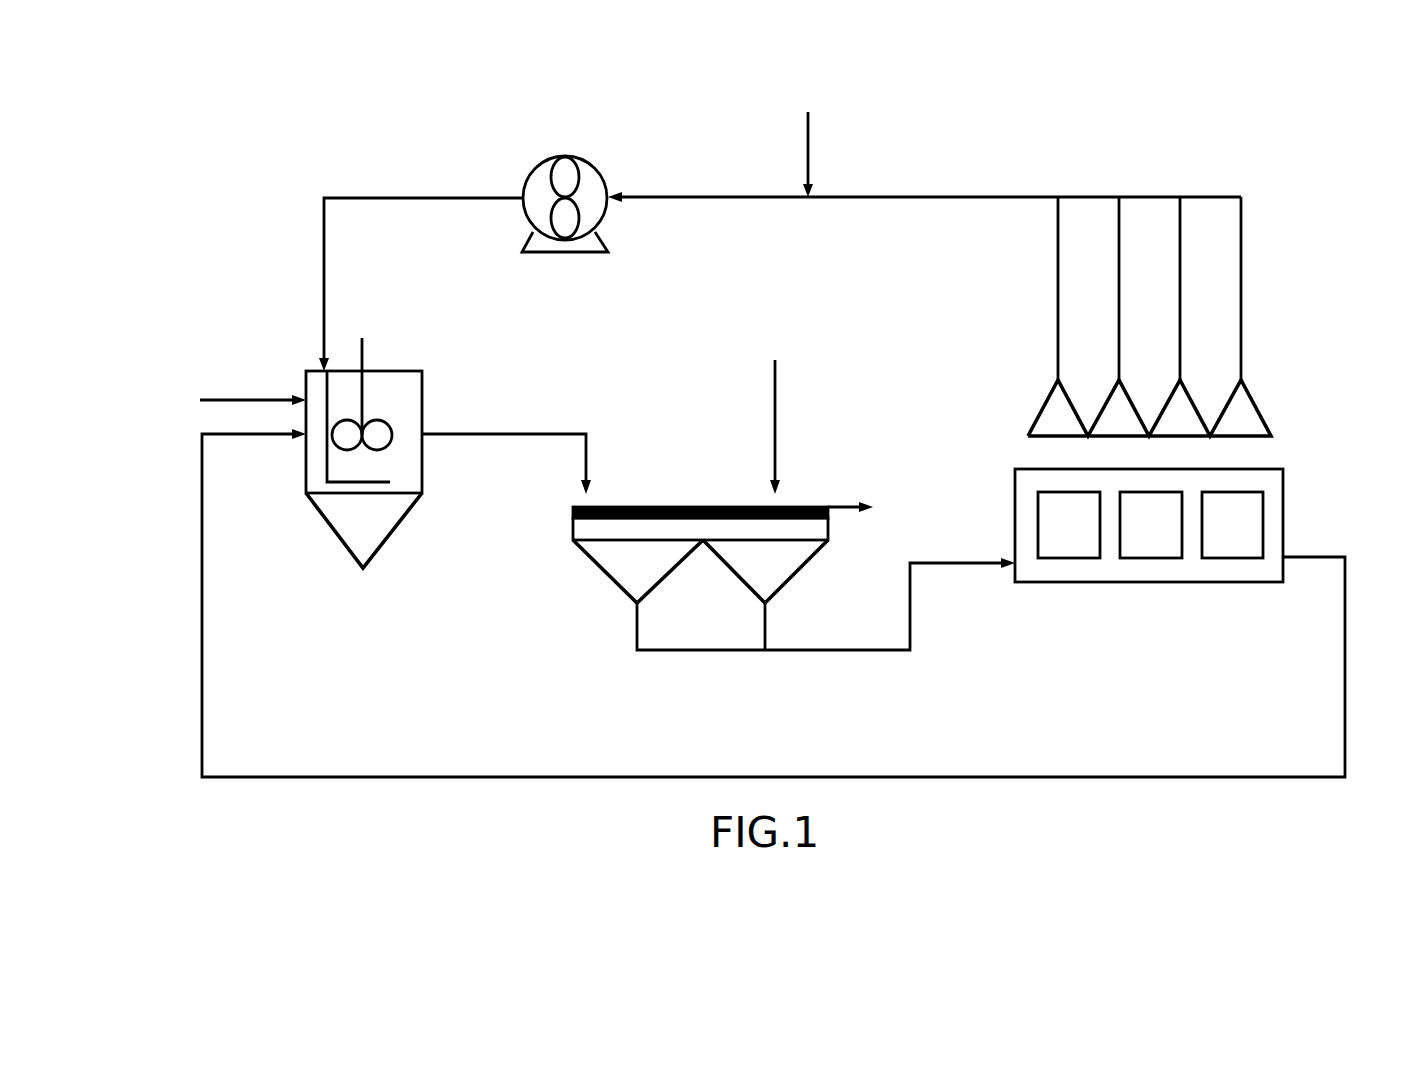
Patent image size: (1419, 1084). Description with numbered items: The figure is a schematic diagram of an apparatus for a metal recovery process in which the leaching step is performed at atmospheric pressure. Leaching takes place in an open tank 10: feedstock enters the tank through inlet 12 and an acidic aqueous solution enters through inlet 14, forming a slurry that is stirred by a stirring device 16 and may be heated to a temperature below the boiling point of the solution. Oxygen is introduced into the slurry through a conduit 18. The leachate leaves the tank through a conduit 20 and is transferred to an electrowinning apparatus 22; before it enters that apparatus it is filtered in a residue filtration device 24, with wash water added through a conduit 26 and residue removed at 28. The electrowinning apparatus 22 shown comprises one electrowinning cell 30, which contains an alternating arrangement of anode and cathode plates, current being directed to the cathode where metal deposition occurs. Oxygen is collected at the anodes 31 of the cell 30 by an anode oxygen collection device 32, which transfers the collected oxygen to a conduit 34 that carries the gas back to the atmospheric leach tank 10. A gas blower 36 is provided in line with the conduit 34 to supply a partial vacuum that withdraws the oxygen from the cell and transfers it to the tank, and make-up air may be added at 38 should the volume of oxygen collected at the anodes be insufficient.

The open tank 10 is at (448, 398).
The inlet 12 is at (262, 398).
The inlet 14 is at (258, 436).
The stirring device 16 is at (363, 410).
The conduit 18 is at (318, 465).
The conduit 20 is at (543, 432).
The electrowinning apparatus 22 is at (1212, 546).
The residue filtration device 24 is at (608, 553).
The conduit 26 is at (776, 410).
The residue outlet 28 is at (840, 507).
The electrowinning cell 30 is at (1196, 546).
The anodes 31 is at (1228, 545).
The anode oxygen collection device 32 is at (1241, 278).
The conduit 34 is at (938, 196).
The gas blower 36 is at (537, 170).
The make-up air inlet 38 is at (808, 140).